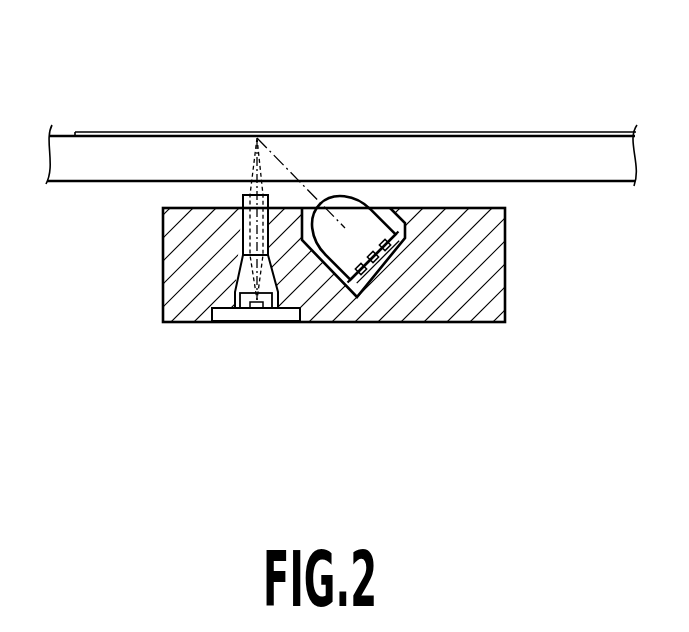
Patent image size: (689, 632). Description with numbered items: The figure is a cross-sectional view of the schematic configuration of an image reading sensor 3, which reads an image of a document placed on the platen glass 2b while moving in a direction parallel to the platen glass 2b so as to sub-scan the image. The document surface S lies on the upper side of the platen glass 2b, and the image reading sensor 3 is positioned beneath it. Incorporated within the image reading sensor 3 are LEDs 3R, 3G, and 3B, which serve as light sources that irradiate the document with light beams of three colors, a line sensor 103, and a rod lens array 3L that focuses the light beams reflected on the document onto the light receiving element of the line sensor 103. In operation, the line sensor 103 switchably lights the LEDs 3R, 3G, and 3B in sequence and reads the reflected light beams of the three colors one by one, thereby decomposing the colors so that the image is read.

The screen S is at (173, 131).
The platen glass 2b is at (385, 167).
The image reading sensor 3 is at (489, 253).
The rod lens array 3L is at (247, 232).
The line sensor 103 is at (257, 308).
The LED 3R is at (362, 272).
The LED 3G is at (376, 259).
The LED 3B is at (388, 246).